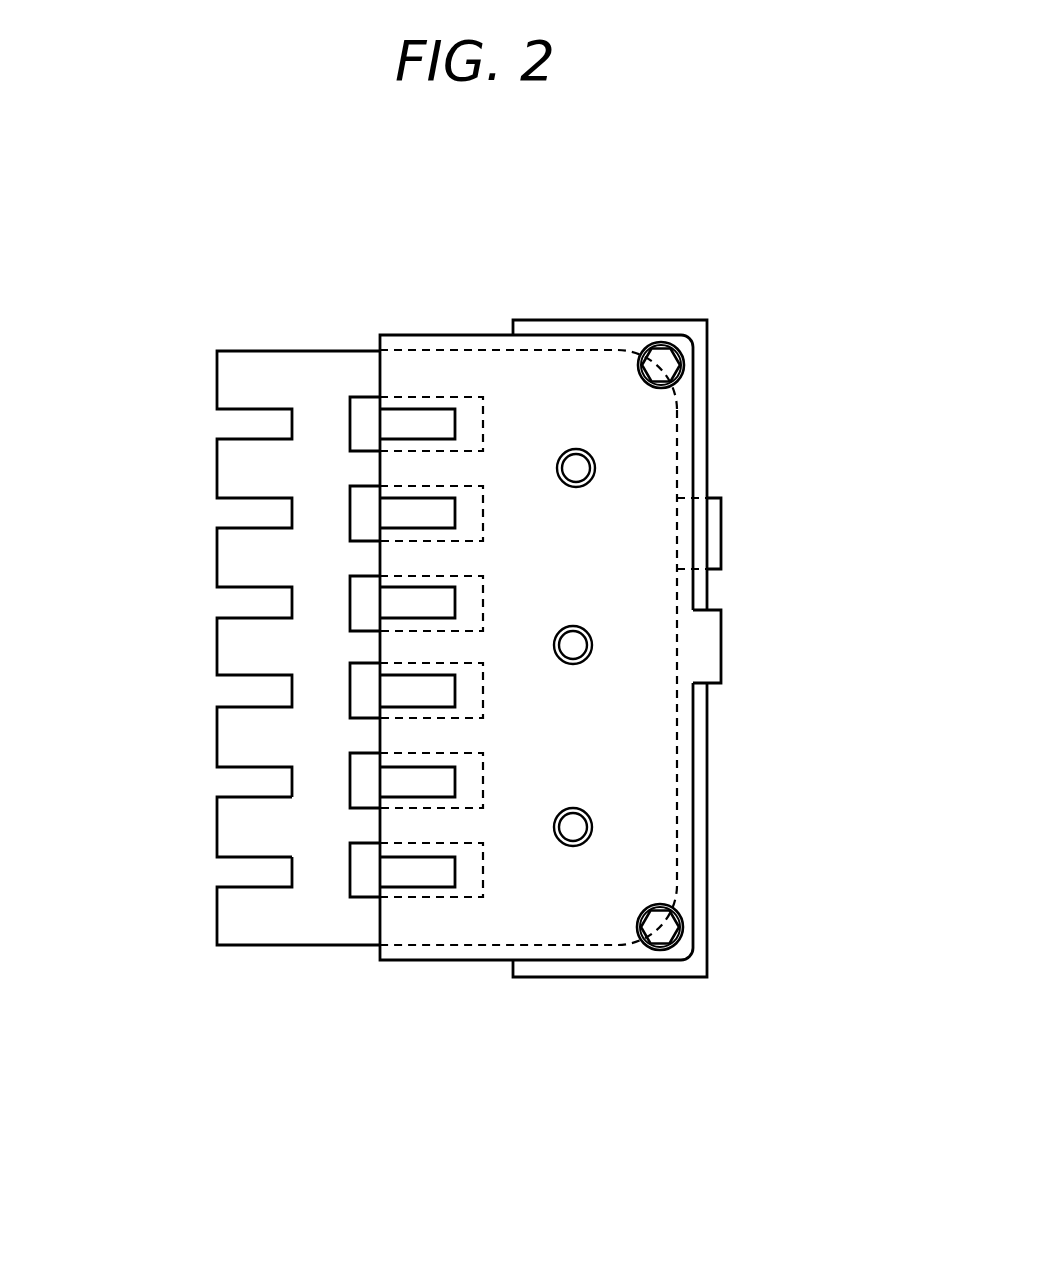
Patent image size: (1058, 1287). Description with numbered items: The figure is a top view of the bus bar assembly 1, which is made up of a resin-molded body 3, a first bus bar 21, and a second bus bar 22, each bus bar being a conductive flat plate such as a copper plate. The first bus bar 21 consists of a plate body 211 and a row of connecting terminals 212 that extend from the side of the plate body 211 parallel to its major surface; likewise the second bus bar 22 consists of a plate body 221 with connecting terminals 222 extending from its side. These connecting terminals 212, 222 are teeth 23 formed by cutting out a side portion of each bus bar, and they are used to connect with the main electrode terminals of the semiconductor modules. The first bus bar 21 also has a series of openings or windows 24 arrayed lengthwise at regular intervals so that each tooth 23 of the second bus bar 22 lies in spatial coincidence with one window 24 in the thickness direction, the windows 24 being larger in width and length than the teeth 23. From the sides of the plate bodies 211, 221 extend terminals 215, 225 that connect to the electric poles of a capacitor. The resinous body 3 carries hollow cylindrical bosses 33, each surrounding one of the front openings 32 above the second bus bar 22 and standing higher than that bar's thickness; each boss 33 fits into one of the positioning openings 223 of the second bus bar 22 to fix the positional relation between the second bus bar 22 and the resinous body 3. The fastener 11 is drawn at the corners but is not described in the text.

The bus bar assembly 1 is at (678, 1008).
The resin-molded body 3 is at (708, 322).
The fixing screw 11 is at (661, 365).
The first bus bar 21 is at (315, 908).
The connecting terminals 212 is at (250, 838).
The terminal 215 is at (712, 540).
The second bus bar 22 is at (507, 913).
The plate body 221 is at (655, 440).
The connecting terminals 222 is at (423, 448).
The positioning openings 223 is at (577, 486).
The terminal 225 is at (712, 648).
The teeth 23 is at (243, 498).
The windows 24 is at (353, 425).
The front openings 32 is at (557, 463).
The bosses 33 is at (578, 449).
The plate body 211 is at (637, 835).